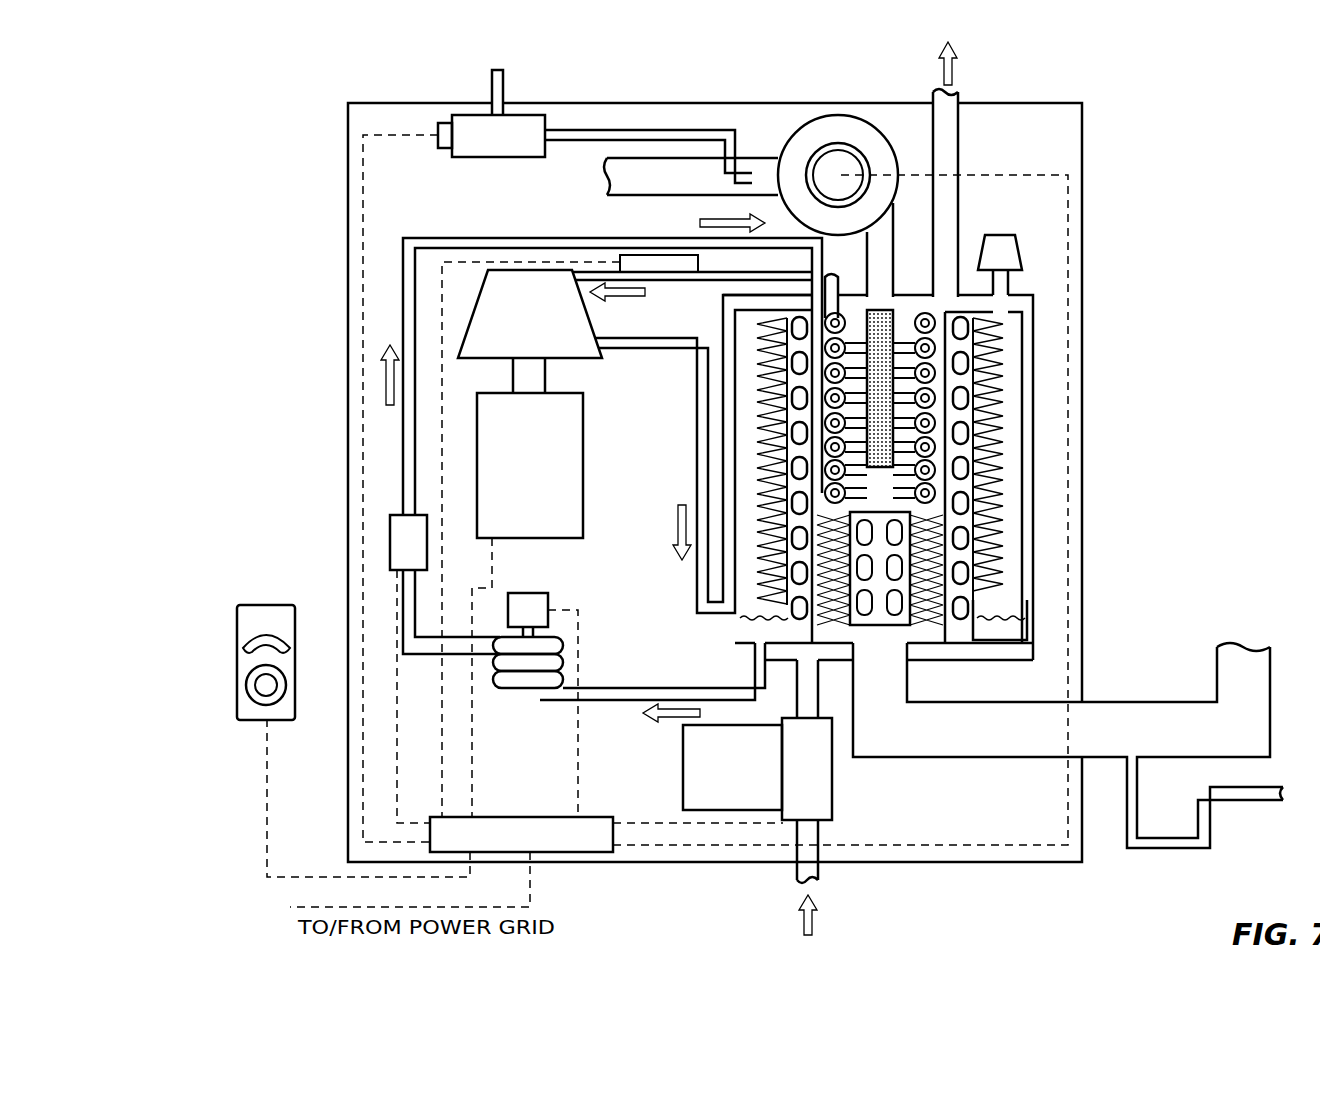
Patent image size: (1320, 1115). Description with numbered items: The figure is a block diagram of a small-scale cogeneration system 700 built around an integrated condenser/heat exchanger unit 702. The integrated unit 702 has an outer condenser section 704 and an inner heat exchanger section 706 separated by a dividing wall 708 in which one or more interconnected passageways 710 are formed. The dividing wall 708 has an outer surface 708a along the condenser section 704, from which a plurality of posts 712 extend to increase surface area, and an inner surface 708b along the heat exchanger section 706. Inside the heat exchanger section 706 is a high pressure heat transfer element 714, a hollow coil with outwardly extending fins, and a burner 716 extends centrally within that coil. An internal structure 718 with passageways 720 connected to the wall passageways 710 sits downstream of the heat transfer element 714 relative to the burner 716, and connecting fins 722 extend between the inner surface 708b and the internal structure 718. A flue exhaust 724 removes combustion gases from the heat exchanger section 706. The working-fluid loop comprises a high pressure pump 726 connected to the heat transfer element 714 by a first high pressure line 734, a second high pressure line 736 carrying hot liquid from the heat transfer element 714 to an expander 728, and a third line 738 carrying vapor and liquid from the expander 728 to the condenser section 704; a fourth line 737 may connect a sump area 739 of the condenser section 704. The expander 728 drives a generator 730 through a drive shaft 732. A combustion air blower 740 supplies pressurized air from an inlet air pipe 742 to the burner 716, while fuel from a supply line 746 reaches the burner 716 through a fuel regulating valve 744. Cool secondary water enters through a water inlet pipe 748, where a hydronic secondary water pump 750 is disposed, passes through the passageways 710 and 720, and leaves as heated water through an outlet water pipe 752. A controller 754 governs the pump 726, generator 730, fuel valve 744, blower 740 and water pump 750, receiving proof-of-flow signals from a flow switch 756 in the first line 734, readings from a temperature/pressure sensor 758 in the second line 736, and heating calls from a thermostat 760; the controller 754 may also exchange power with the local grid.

The cogeneration system 700 is at (672, 84).
The integrated condenser/heat exchanger unit 702 is at (1036, 298).
The outer condenser section 704 is at (1005, 607).
The inner heat exchanger section 706 is at (1002, 475).
The dividing wall 708 is at (963, 385).
The outer surface 708a is at (973, 595).
The inner surface 708b is at (940, 375).
The passageways 710 is at (1002, 500).
The posts 712 is at (940, 445).
The high pressure heat transfer element 714 is at (1000, 422).
The burner 716 is at (993, 333).
The internal structure 718 is at (880, 627).
The passageways 720 is at (945, 557).
The connecting fins 722 is at (910, 545).
The flue exhaust 724 is at (903, 758).
The high pressure pump 726 is at (508, 688).
The expander 728 is at (593, 360).
The generator 730 is at (585, 537).
The drive shaft 732 is at (547, 380).
The first high pressure line 734 is at (403, 290).
The second high pressure line 736 is at (850, 275).
The fourth line 737 is at (560, 703).
The third line 738 is at (697, 583).
The sump area 739 is at (1007, 632).
The combustion air blower 740 is at (842, 116).
The inlet air pipe 742 is at (607, 176).
The fuel regulating valve 744 is at (523, 158).
The supply line 746 is at (503, 72).
The water inlet pipe 748 is at (818, 880).
The hydronic secondary water pump 750 is at (683, 760).
The outlet water pipe 752 is at (935, 92).
The controller 754 is at (598, 817).
The flow switch 756 is at (390, 525).
The temperature/pressure sensor 758 is at (698, 263).
The thermostat 760 is at (272, 605).